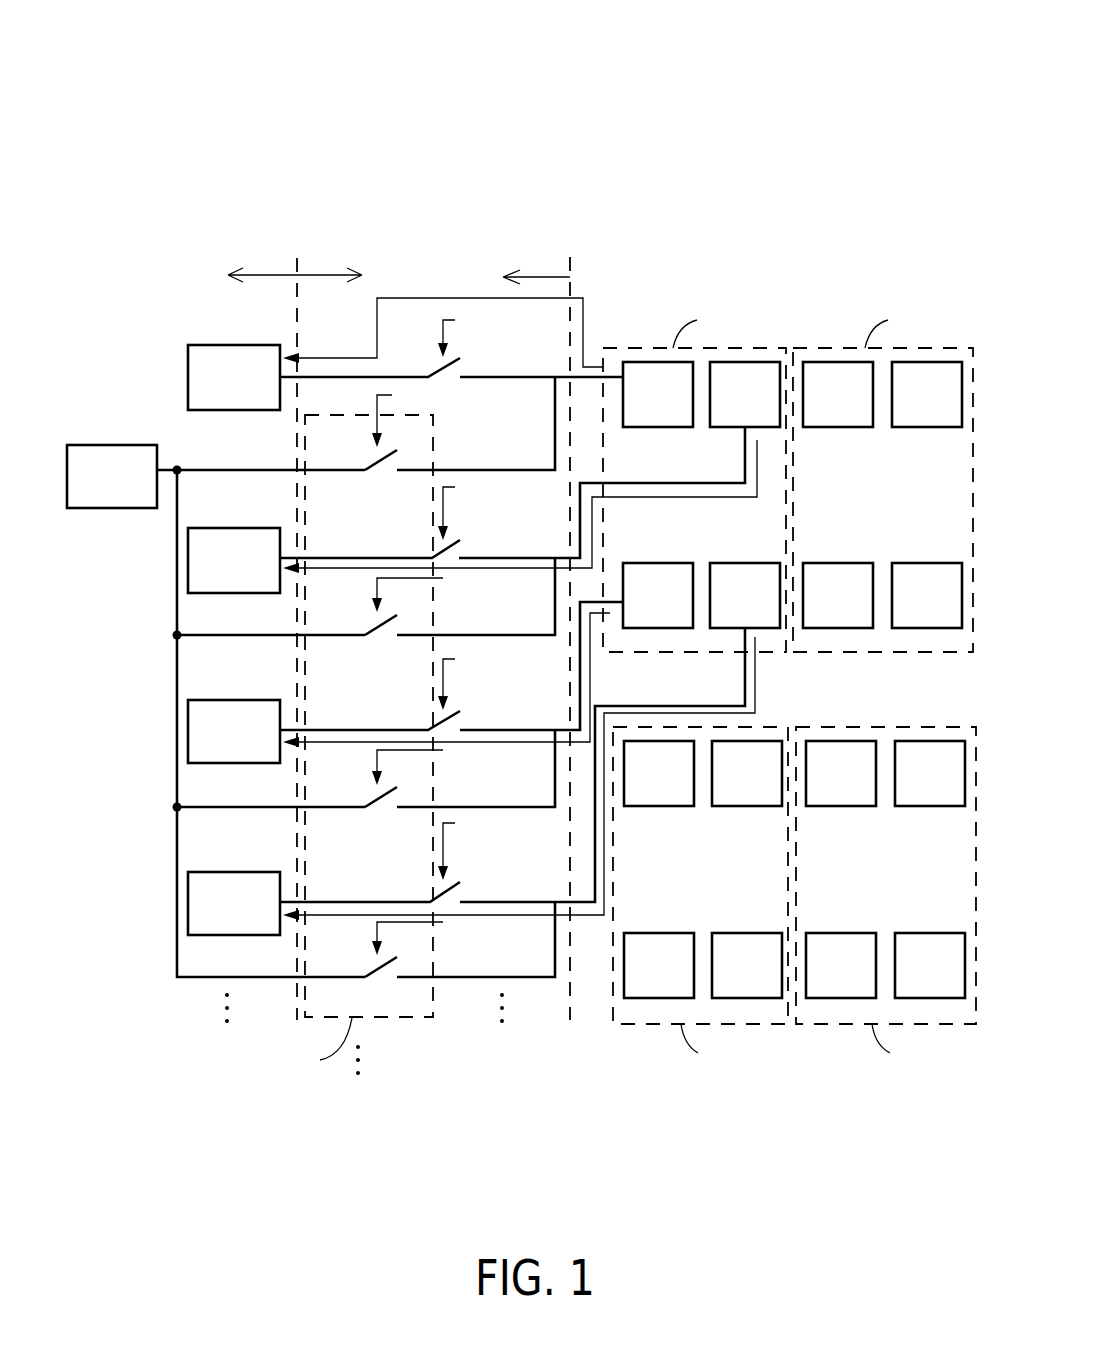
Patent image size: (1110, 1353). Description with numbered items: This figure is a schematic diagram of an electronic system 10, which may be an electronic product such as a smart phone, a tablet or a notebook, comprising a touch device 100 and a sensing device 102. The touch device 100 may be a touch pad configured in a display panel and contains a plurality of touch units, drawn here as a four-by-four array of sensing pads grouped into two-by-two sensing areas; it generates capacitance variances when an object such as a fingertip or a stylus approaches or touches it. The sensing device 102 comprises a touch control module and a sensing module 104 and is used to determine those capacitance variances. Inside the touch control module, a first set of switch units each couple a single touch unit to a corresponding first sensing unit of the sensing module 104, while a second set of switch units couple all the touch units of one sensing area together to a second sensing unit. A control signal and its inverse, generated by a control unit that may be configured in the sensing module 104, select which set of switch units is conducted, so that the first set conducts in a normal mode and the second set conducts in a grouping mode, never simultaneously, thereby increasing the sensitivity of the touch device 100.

The electronic system 10 is at (803, 52).
The touch device 100 is at (973, 248).
The sensing device 102 is at (572, 248).
The sensing module 104 is at (173, 585).